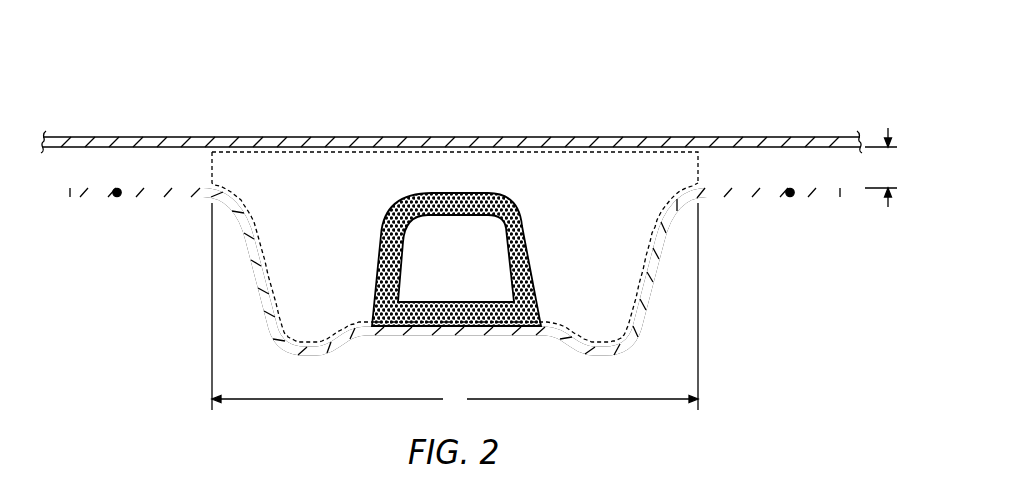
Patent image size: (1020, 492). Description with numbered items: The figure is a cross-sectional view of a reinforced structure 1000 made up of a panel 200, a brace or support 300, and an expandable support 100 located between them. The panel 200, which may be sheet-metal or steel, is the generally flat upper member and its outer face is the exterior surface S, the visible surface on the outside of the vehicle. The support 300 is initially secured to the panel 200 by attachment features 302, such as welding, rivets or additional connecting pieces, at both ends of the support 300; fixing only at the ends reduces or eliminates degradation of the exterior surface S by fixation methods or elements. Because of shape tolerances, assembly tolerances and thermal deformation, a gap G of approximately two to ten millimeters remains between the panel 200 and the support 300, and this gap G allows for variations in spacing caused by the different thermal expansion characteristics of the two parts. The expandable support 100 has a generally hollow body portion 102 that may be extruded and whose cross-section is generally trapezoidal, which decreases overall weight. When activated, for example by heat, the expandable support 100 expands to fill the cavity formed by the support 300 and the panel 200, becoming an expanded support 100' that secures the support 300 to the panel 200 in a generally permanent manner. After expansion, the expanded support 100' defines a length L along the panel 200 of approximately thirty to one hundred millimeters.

The reinforced structure 1000 is at (469, 217).
The panel 200 is at (200, 137).
The expanded support 100' is at (455, 211).
The expandable support 100 is at (455, 284).
The body portion 102 is at (512, 212).
The support 300 is at (163, 200).
The attachment features 302 is at (117, 197).
The exterior surface S is at (324, 124).
The gap G is at (881, 167).
The length L is at (455, 308).